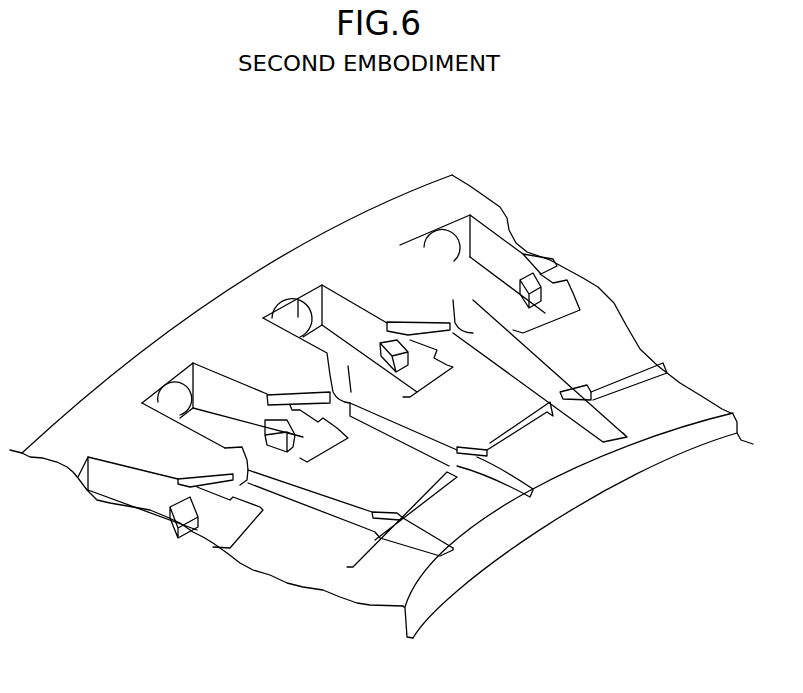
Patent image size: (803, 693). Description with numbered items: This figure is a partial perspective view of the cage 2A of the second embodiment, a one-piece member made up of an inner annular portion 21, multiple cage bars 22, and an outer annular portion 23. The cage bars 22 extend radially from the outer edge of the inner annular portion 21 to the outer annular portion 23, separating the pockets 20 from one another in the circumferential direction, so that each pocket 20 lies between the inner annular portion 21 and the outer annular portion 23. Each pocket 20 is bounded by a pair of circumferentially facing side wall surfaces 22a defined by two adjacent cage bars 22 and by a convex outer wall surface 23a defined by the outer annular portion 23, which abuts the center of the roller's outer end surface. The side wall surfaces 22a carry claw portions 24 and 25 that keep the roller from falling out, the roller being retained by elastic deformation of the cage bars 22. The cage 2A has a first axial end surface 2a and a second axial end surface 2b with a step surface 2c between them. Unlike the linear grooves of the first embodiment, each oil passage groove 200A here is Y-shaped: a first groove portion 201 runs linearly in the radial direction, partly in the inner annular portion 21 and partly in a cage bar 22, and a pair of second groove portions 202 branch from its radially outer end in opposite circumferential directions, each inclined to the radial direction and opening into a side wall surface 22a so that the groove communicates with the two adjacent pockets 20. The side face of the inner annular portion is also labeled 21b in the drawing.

The cage 2A is at (233, 264).
The first axial end surface 2a is at (597, 345).
The second axial end surface 2b is at (557, 453).
The step surface 2c is at (540, 485).
The pocket 20 is at (336, 300).
The inner annular portion 21 is at (655, 402).
The side face of frame bar 21b is at (470, 560).
The cage bar 22 is at (405, 276).
The side wall surface 22a is at (352, 293).
The outer annular portion 23 is at (262, 296).
The outer wall surface 23a is at (294, 300).
The claw portion 24 is at (535, 290).
The claw portion 25 is at (577, 293).
The oil passage groove 200A is at (505, 131).
The first groove portion 201 is at (493, 349).
The second groove portion 202 is at (453, 295).